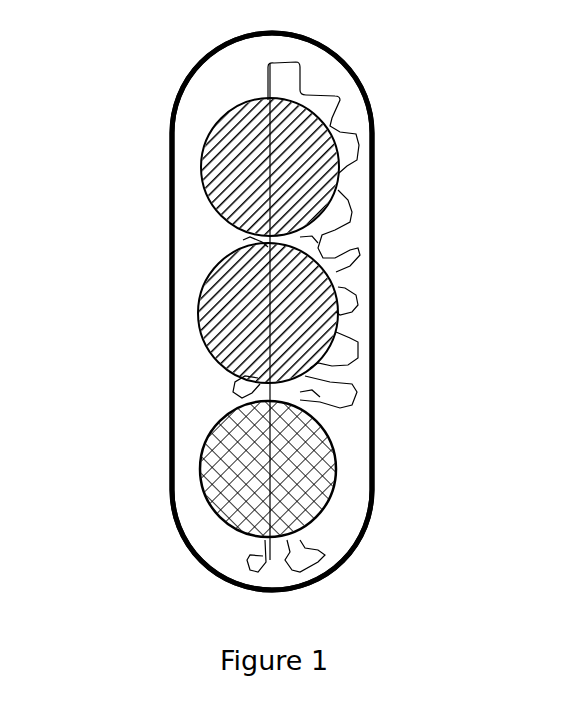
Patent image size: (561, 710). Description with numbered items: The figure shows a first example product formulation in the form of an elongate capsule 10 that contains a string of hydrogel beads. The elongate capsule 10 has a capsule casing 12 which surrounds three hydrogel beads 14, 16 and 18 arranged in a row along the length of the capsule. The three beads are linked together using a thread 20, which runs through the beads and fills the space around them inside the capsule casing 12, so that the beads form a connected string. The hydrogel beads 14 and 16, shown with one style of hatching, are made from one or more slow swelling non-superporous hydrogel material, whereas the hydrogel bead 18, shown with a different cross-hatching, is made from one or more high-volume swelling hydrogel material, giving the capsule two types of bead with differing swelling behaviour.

The elongate capsule 10 is at (374, 449).
The capsule casing 12 is at (374, 510).
The hydrogel bead 14 is at (201, 168).
The hydrogel bead 16 is at (199, 313).
The hydrogel bead 18 is at (200, 468).
The thread 20 is at (340, 99).